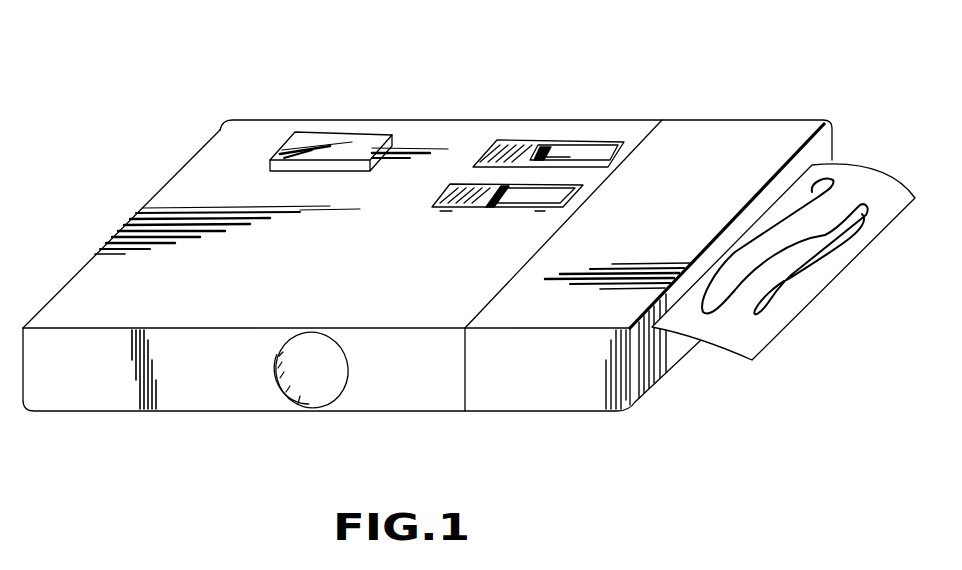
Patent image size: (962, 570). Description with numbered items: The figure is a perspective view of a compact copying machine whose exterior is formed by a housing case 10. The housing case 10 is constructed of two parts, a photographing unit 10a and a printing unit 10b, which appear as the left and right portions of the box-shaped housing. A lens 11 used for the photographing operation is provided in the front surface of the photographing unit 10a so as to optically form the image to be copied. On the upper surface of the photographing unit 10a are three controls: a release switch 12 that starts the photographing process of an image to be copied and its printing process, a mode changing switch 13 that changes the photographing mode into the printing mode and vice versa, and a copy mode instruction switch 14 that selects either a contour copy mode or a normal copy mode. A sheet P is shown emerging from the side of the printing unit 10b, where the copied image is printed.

The housing case 10 is at (456, 93).
The photographing unit 10a is at (238, 128).
The printing unit 10b is at (703, 130).
The lens 11 is at (310, 376).
The release switch 12 is at (353, 142).
The mode changing switch 13 is at (559, 142).
The copy mode instruction switch 14 is at (493, 207).
The printed sheet P is at (778, 323).